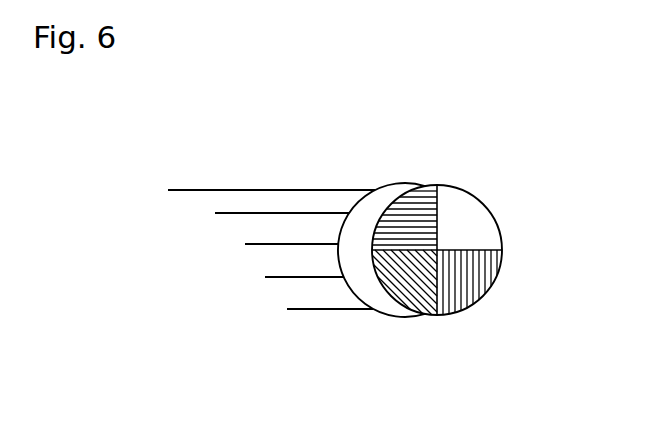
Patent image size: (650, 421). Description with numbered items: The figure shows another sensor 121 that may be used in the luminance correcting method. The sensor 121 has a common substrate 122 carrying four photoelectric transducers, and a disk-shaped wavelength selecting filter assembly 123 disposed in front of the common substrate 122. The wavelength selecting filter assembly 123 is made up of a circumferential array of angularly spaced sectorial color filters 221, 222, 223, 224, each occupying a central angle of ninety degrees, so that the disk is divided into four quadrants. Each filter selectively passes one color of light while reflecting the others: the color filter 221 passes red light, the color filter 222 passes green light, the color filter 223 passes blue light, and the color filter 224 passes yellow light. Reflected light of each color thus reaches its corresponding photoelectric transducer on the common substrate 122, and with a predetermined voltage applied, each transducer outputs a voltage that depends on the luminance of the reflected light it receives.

The sensor 121 is at (377, 244).
The common substrate 122 is at (377, 316).
The wavelength selecting filter assembly 123 is at (500, 262).
The color filter 221 is at (404, 193).
The color filter 222 is at (412, 317).
The color filter 223 is at (480, 298).
The color filter 224 is at (478, 218).